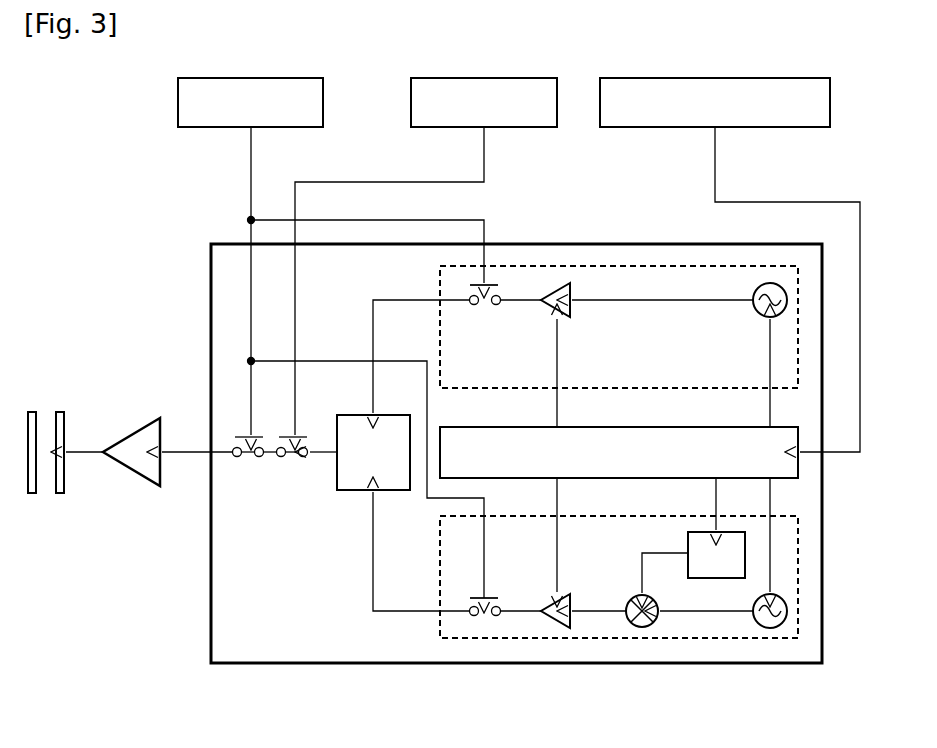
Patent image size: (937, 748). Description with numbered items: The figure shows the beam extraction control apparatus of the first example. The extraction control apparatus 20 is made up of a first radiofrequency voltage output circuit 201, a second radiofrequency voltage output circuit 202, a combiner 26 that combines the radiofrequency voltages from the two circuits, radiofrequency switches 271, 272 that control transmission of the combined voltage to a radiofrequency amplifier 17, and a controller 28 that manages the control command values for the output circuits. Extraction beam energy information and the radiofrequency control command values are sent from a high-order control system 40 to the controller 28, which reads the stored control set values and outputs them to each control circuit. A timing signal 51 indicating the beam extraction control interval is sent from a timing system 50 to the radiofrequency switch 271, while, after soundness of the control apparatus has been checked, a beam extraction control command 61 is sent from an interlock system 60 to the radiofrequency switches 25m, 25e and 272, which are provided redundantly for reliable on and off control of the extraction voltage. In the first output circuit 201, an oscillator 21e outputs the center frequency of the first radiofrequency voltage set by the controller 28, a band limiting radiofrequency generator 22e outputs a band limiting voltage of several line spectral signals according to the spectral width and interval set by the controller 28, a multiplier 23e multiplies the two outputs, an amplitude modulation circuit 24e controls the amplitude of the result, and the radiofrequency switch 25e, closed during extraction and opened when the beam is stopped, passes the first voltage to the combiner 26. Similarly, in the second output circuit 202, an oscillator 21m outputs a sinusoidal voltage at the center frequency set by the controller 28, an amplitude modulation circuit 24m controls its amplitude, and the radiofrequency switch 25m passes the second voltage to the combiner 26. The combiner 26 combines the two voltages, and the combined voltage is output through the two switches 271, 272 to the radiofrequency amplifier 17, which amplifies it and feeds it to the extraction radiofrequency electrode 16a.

The interlock system 60 is at (250, 102).
The beam extraction control command 61 is at (366, 362).
The timing system 50 is at (484, 102).
The timing signal 51 is at (402, 281).
The high-order control system 40 is at (730, 265).
The extraction control apparatus 20 is at (237, 632).
The extraction radiofrequency electrode 16a is at (66, 420).
The radiofrequency amplifier 17 is at (145, 465).
The radiofrequency switch 272 is at (255, 458).
The radiofrequency switch 271 is at (297, 458).
The combiner 26 is at (390, 455).
The controller 28 is at (619, 455).
The amplitude modulation circuit 24m is at (578, 282).
The oscillator 21m is at (782, 285).
The radiofrequency switch 25m is at (494, 309).
The second radiofrequency voltage output circuit 202 is at (450, 291).
The amplitude modulation circuit 24e is at (578, 629).
The band limiting radiofrequency generator 22e is at (693, 562).
The multiplier 23e is at (657, 630).
The oscillator 21e is at (782, 630).
The radiofrequency switch 25e is at (490, 622).
The first radiofrequency voltage output circuit 201 is at (452, 618).